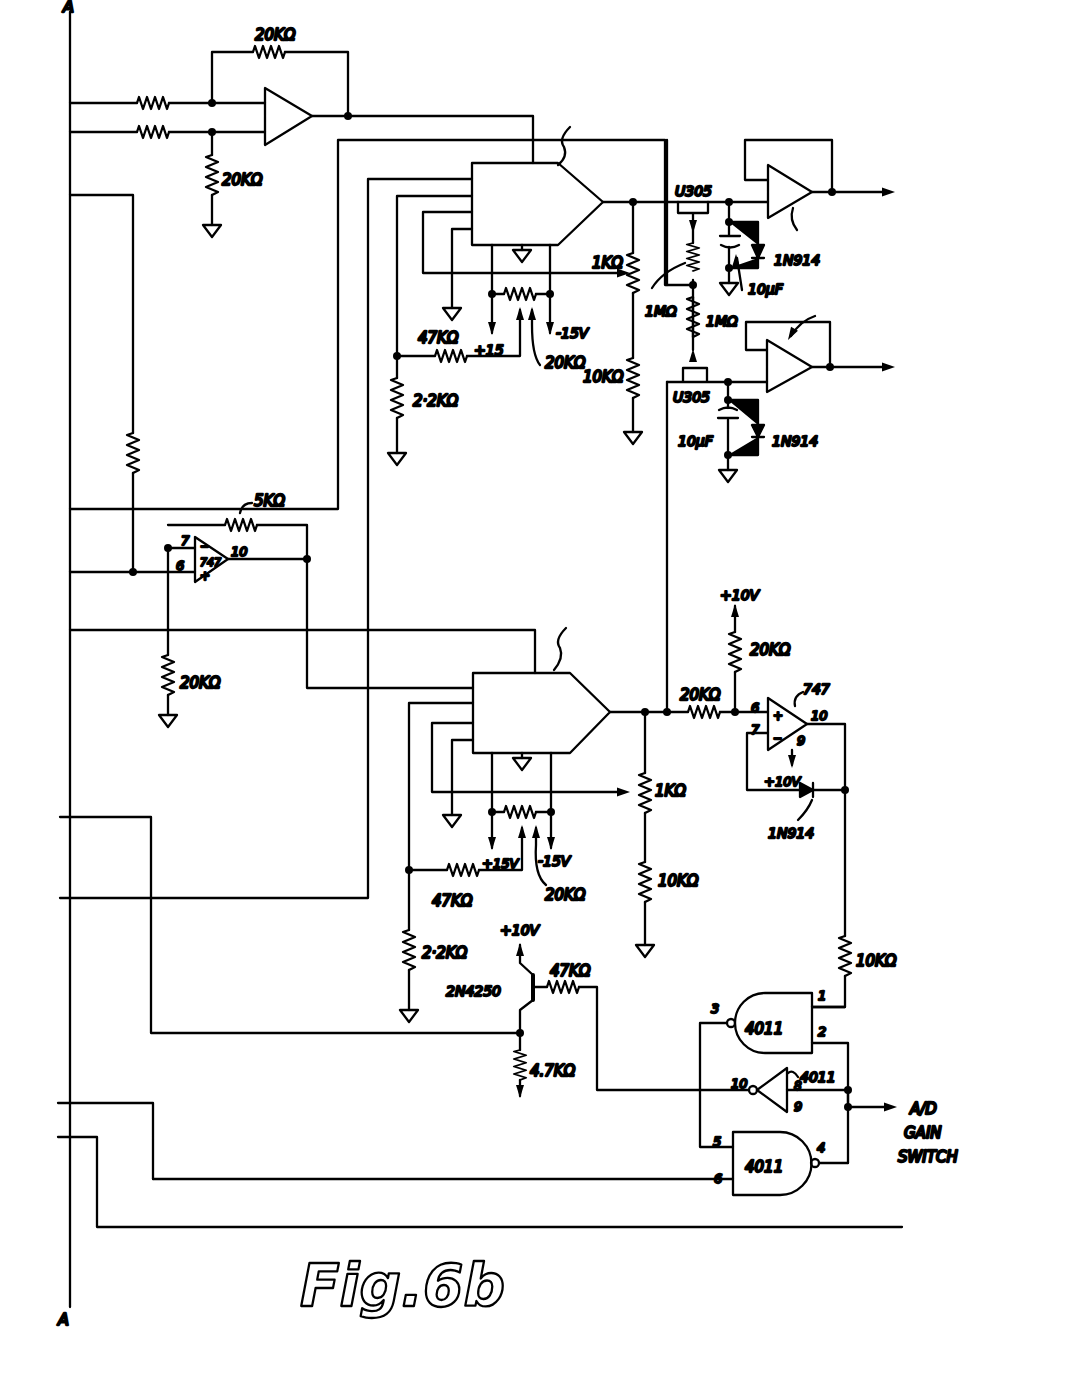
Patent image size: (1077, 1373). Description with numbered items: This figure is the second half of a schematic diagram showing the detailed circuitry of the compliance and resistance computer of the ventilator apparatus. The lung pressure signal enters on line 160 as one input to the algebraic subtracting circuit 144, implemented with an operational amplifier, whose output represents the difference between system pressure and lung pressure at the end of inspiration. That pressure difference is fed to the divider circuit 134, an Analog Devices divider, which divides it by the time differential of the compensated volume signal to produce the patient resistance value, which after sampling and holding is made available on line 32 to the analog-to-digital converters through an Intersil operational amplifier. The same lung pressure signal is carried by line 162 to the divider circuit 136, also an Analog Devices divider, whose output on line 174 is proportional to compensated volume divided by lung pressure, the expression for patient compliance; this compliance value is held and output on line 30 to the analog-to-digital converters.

The line 160 is at (88, 135).
The algebraic subtracting circuit 144 is at (286, 136).
The line 162 is at (133, 346).
The divider circuit 134 is at (570, 170).
The divider circuit 136 is at (568, 676).
The line 32 is at (845, 190).
The line 30 is at (850, 366).
The line 174 is at (668, 532).